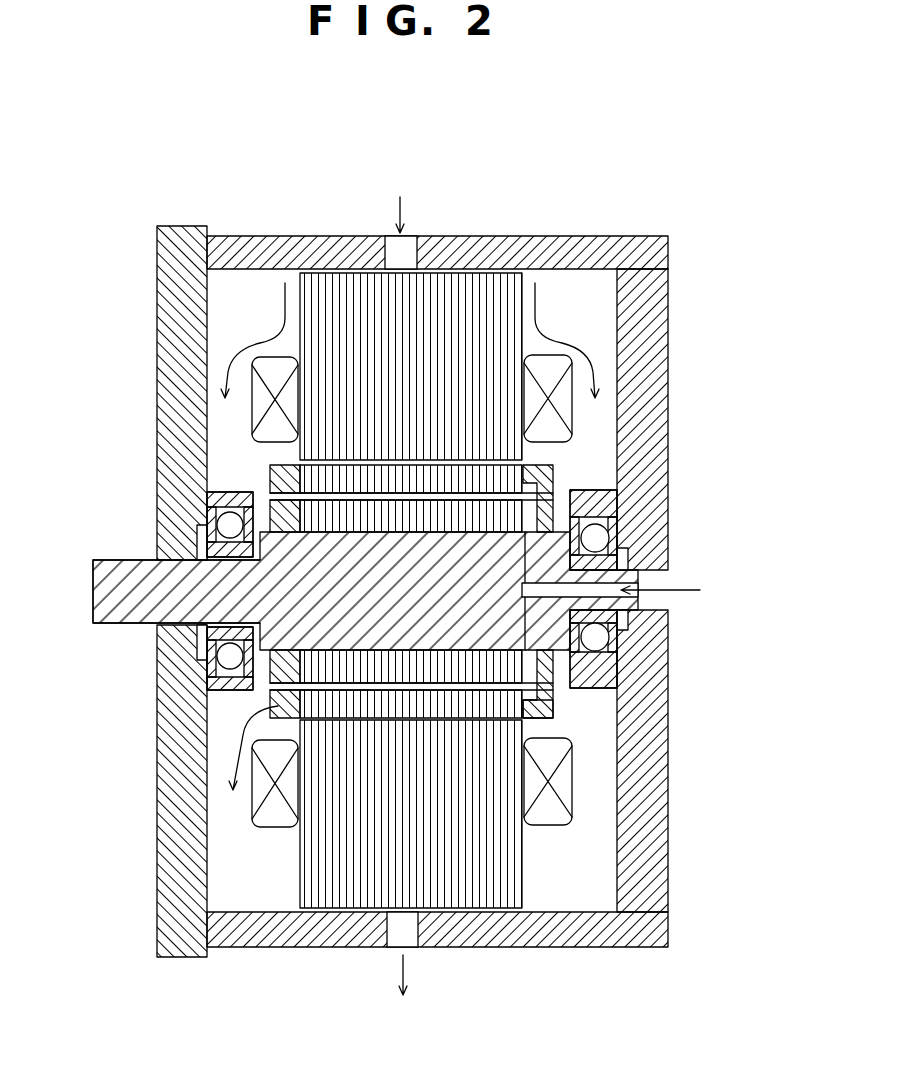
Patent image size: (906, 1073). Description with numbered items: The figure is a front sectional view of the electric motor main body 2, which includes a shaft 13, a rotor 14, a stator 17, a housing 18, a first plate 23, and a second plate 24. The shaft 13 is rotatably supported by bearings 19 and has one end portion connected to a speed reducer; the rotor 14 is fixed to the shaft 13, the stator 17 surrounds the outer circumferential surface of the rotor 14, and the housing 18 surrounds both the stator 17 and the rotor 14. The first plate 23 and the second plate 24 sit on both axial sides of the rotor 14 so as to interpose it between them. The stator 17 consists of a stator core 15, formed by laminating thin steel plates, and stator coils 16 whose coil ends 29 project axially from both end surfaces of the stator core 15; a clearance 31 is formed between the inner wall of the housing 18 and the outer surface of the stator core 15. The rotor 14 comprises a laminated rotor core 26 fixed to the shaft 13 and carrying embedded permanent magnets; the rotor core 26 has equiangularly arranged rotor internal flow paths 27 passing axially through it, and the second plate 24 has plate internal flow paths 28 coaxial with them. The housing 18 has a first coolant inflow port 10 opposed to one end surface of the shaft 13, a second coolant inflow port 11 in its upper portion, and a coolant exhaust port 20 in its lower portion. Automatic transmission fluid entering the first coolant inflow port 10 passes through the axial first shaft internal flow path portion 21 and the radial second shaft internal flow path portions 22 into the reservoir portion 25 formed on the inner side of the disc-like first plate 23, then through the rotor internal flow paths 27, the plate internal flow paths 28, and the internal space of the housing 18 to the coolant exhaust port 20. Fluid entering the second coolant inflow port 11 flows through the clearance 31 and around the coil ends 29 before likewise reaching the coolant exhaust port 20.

The electric motor main body 2 is at (481, 587).
The first coolant inflow port 10 is at (394, 600).
The second coolant inflow port 11 is at (388, 236).
The shaft 13 is at (133, 613).
The rotor 14 is at (406, 555).
The stator core 15 is at (406, 537).
The stator coils 16 is at (543, 366).
The stator 17 is at (495, 872).
The housing 18 is at (444, 631).
The bearings 19 is at (228, 528).
The coolant exhaust port 20 is at (393, 948).
The first shaft internal flow path portion 21 is at (634, 609).
The second shaft internal flow path portions 22 is at (540, 505).
The first plate 23 is at (548, 688).
The second plate 24 is at (238, 727).
The reservoir portion 25 is at (545, 722).
The rotor core 26 is at (445, 470).
The rotor internal flow paths 27 is at (340, 497).
The plate internal flow paths 28 is at (272, 490).
The coil ends 29 is at (272, 368).
The clearance 31 is at (437, 204).